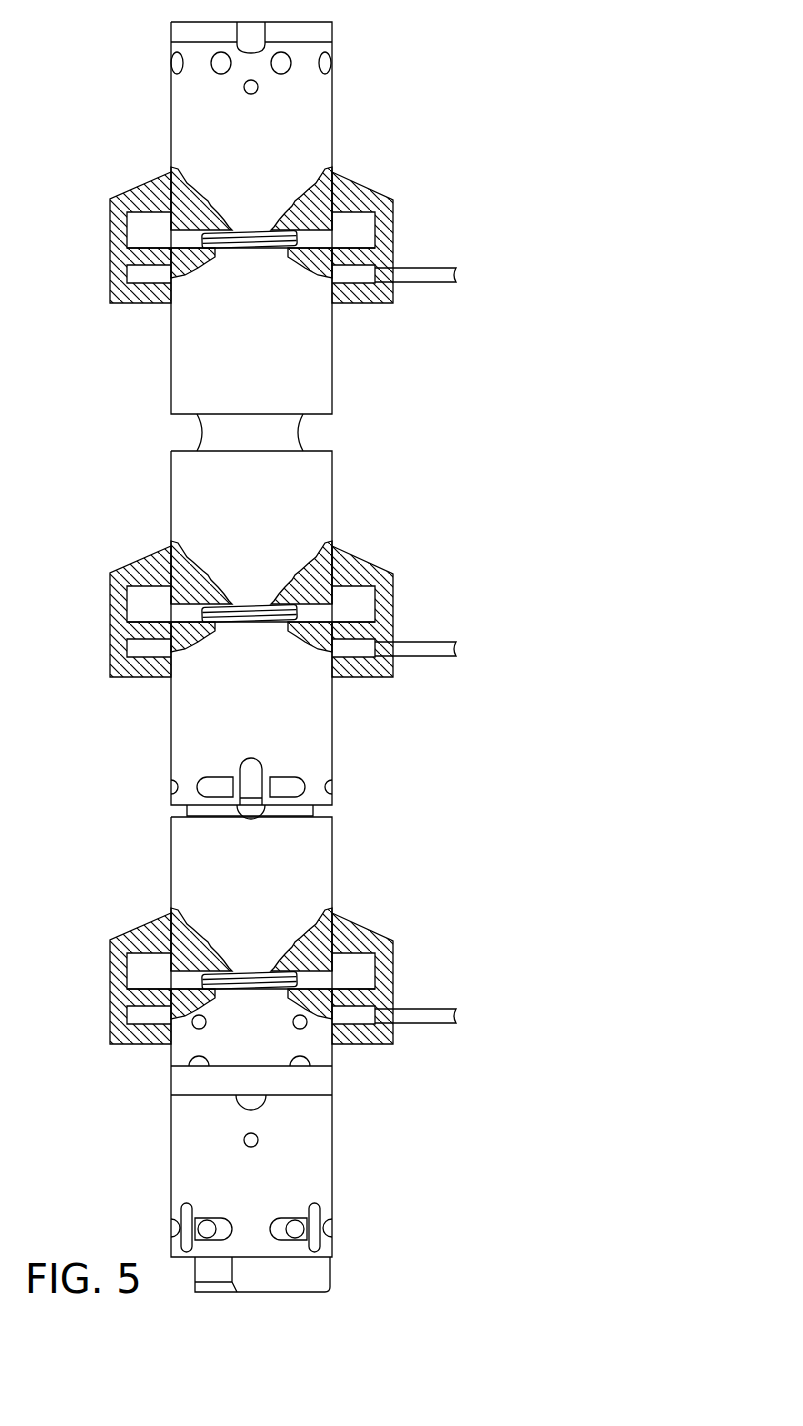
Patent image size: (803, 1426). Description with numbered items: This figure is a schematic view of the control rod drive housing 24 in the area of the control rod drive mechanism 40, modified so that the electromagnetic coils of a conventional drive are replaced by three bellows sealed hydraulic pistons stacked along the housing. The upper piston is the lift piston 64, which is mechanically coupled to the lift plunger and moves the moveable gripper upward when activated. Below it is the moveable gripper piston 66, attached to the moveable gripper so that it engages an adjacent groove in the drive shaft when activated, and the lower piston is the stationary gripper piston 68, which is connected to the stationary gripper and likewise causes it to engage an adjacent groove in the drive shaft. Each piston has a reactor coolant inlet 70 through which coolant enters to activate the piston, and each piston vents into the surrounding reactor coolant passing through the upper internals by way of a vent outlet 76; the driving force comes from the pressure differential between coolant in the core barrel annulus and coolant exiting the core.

The control rod drive housing 24 is at (360, 90).
The control rod drive mechanism 40 is at (462, 510).
The lift piston 64 is at (322, 238).
The moveable gripper piston 66 is at (322, 612).
The stationary gripper piston 68 is at (322, 979).
The reactor coolant inlet 70 is at (412, 278).
The vent outlet 76 is at (394, 231).